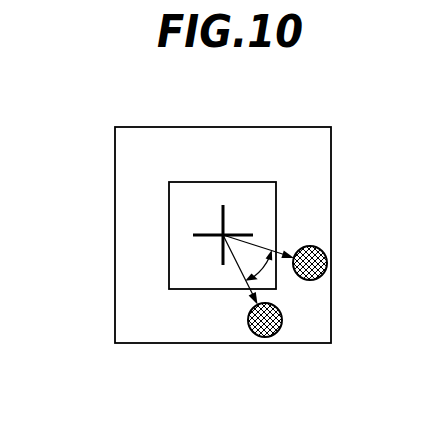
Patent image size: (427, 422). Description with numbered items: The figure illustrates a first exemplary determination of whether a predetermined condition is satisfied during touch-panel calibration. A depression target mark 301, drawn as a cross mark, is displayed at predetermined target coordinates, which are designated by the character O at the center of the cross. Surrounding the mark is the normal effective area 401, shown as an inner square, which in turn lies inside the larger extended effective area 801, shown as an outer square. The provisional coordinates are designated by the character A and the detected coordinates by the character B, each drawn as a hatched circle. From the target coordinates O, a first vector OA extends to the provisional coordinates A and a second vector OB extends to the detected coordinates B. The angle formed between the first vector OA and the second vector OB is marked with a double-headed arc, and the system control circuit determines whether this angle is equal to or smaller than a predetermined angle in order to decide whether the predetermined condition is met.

The extended effective area 801 is at (115, 258).
The effective area 401 is at (192, 289).
The depression target mark 301 is at (223, 235).
The target coordinates O is at (225, 235).
The first vector OA is at (260, 246).
The second vector OB is at (239, 267).
The provisional coordinates A is at (327, 252).
The detected coordinates B is at (273, 337).